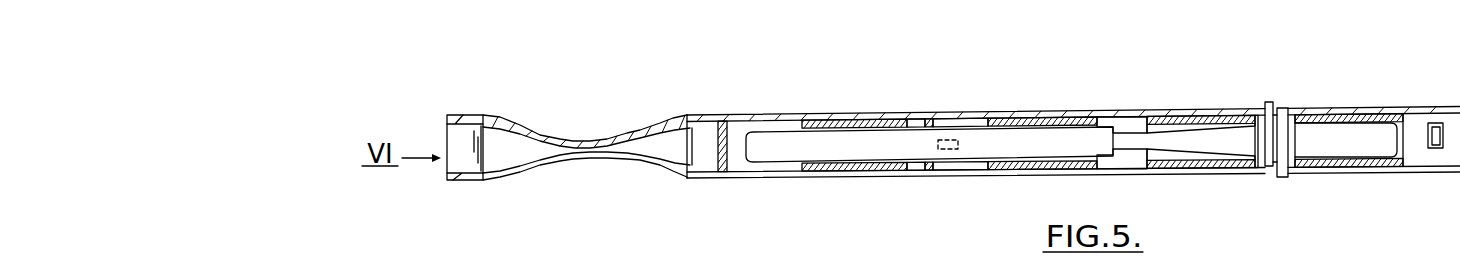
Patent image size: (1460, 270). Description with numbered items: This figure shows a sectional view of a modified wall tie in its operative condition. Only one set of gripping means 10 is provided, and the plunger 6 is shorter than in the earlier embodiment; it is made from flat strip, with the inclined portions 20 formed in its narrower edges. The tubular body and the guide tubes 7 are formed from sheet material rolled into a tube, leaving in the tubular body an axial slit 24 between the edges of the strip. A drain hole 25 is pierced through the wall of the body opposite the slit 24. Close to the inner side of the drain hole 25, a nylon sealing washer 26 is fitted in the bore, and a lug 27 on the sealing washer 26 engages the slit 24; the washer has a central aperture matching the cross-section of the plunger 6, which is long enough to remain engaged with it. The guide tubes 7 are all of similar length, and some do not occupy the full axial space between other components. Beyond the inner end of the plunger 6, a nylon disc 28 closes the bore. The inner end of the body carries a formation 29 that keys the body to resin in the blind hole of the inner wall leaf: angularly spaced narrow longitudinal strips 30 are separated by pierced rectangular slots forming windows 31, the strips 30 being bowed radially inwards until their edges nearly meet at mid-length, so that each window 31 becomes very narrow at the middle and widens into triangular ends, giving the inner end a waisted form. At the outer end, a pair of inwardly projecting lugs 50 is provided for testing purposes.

The plunger 6 is at (1083, 147).
The guide tubes 7 is at (858, 121).
The gripping means 10 is at (1287, 90).
The inclined portions 20 is at (1170, 130).
The axial slit 24 is at (958, 173).
The drain hole 25 is at (950, 117).
The sealing washer 26 is at (929, 120).
The lug 27 is at (925, 175).
The disc 28 is at (730, 128).
The formation 29 is at (565, 112).
The longitudinal strips 30 is at (648, 141).
The windows 31 is at (592, 128).
The lugs 50 is at (1437, 140).